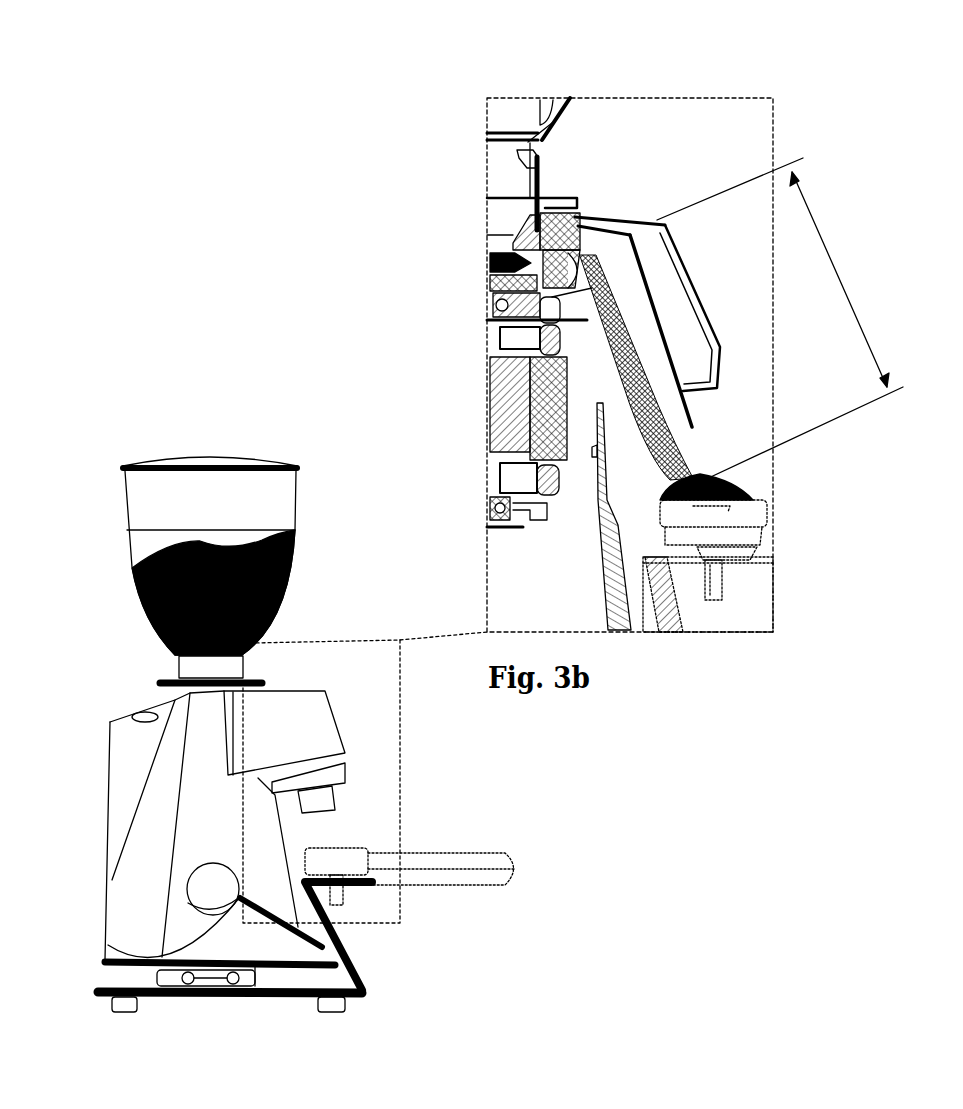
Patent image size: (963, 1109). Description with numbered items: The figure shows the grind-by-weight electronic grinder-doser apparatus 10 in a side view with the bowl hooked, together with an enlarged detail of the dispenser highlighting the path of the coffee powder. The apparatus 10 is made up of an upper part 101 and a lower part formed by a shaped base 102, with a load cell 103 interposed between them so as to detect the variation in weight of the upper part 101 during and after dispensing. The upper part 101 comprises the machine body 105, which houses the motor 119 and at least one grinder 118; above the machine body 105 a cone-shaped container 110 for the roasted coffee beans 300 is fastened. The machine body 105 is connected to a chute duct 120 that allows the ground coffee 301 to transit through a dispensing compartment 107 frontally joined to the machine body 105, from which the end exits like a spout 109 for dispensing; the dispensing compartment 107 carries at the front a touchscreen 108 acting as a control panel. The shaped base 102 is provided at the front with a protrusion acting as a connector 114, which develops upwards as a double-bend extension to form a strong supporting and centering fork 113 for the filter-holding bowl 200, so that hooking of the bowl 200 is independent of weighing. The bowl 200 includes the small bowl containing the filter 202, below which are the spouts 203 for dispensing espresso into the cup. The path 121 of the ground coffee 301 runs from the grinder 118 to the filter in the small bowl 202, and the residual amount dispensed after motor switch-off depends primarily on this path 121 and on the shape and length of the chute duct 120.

In FIG. 3A, the electronic grinder-doser apparatus 10 is at (82, 380).
In FIG. 3A, the upper part of the apparatus 101 is at (83, 627).
In FIG. 3A, the shaped base 102 is at (380, 993).
In FIG. 3A, the load cell 103 is at (182, 974).
In FIG. 3A, the machine body 105 is at (188, 812).
In FIG. 3B, the machine body 105 is at (600, 561).
In FIG. 3B, the dispensing compartment 107 is at (610, 214).
In FIG. 3B, the touchscreen 108 is at (683, 247).
In FIG. 3B, the spout 109 is at (680, 415).
In FIG. 3B, the cone-shaped container 110 is at (546, 133).
In FIG. 3B, the supporting and centering fork 113 is at (750, 563).
In FIG. 3B, the connector 114 is at (670, 627).
In FIG. 3B, the grinder 118 is at (538, 214).
In FIG. 3B, the motor 119 is at (490, 405).
In FIG. 3B, the chute duct 120 is at (490, 314).
In FIG. 3B, the path of the ground powder 121 is at (780, 320).
In FIG. 3A, the filter-holding bowl 200 is at (445, 850).
In FIG. 3B, the small bowl containing the filter 202 is at (737, 512).
In FIG. 3B, the spouts 203 is at (712, 603).
In FIG. 3B, the roasted coffee beans 300 is at (508, 103).
In FIG. 3B, the ground coffee 301 is at (740, 483).